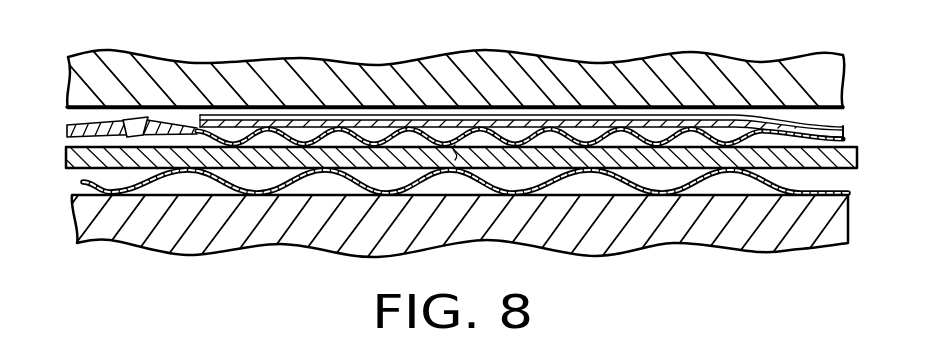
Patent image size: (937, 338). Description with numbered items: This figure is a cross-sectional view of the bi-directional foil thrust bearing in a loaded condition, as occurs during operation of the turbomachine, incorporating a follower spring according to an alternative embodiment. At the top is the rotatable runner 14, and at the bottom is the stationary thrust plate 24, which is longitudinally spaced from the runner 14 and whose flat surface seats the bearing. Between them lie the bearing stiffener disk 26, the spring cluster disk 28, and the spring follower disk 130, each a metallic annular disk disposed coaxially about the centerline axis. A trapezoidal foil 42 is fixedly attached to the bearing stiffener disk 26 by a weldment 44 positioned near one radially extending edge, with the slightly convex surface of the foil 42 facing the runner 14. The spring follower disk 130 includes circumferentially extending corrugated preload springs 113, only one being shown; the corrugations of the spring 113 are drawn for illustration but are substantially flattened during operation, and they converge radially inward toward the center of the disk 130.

The runner 14 is at (250, 62).
The foil 42 is at (507, 114).
The weldment 44 is at (128, 126).
The bearing stiffener disk 26 is at (846, 131).
The spring cluster disk 28 is at (855, 167).
The spring follower disk 130 is at (830, 193).
The corrugated preload spring 113 is at (770, 176).
The thrust plate 24 is at (662, 233).